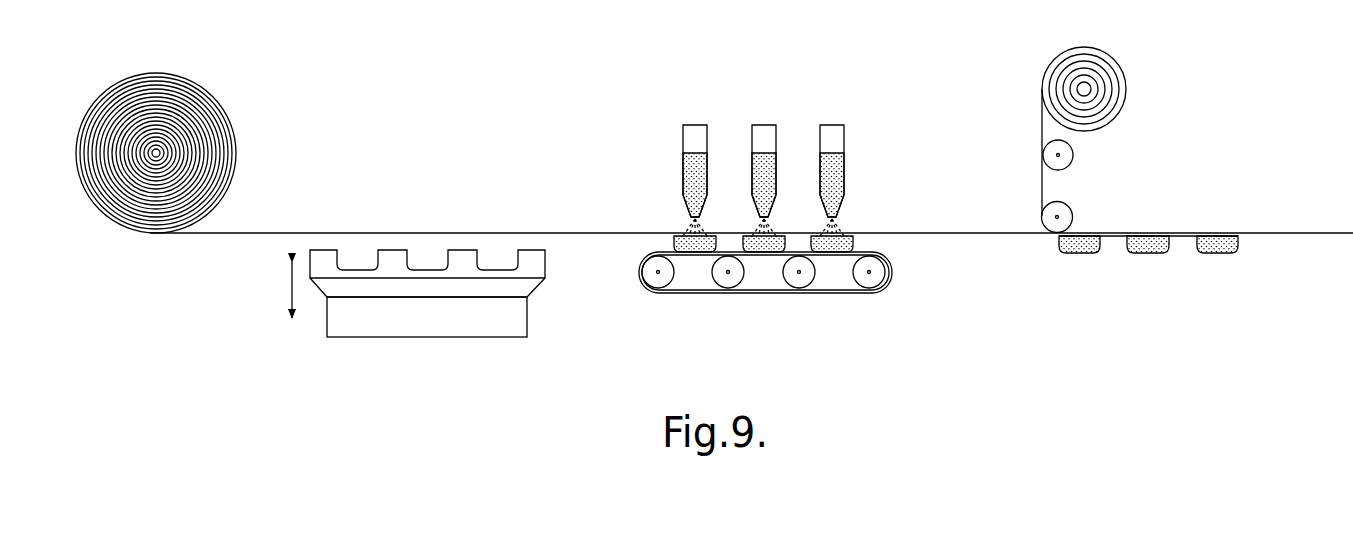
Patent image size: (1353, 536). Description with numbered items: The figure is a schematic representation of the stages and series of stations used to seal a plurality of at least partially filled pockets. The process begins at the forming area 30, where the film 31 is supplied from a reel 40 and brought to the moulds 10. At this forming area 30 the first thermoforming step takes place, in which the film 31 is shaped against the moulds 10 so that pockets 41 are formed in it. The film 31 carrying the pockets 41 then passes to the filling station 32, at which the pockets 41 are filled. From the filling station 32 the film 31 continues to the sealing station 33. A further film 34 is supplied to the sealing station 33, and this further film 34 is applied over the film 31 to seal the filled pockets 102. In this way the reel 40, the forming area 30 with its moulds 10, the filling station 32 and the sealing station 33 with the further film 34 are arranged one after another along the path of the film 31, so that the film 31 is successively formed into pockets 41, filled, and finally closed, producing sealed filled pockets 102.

The mould 10 is at (430, 338).
The forming area 30 is at (254, 329).
The film 31 is at (263, 233).
The filling station 32 is at (741, 312).
The sealing station 33 is at (1151, 272).
The further film 34 is at (1110, 57).
The reel 40 is at (216, 101).
The pocket 41 is at (672, 242).
The filled pocket 102 is at (1058, 250).